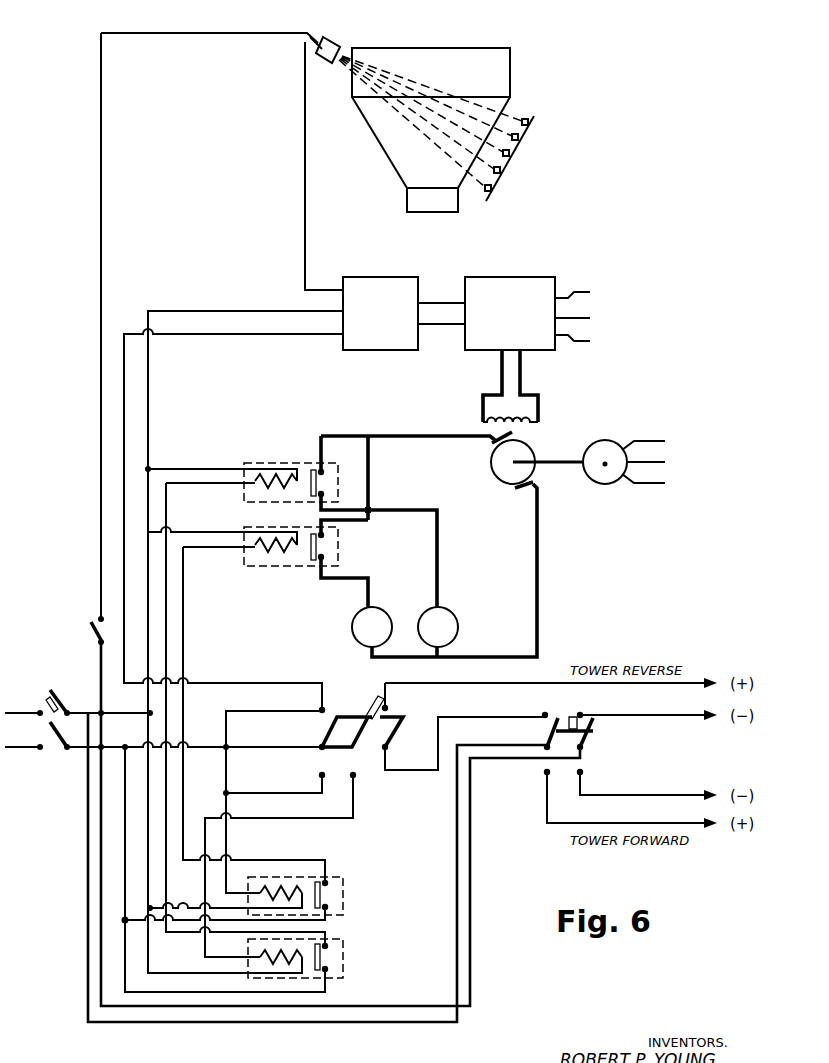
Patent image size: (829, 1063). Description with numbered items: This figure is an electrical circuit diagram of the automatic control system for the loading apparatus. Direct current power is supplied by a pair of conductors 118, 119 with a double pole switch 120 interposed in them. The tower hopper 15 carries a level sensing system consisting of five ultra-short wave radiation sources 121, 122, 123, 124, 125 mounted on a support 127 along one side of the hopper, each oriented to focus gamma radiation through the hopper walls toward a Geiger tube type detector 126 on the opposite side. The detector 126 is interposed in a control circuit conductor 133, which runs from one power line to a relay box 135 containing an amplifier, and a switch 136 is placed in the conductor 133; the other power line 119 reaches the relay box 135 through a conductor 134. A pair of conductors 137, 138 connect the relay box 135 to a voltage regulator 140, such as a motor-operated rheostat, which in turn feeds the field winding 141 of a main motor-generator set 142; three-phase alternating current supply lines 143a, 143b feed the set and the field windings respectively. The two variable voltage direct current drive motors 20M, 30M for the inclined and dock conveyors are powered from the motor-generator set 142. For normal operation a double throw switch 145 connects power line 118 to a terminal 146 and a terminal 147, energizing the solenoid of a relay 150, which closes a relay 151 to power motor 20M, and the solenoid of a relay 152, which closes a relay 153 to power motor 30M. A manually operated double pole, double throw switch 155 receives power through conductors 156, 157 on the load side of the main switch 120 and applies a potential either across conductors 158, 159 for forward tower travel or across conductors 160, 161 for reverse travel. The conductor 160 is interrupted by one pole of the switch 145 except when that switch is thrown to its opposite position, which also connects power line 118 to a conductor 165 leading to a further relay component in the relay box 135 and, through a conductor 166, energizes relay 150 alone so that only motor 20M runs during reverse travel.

The tower hopper 15 is at (510, 80).
The conductor 118 is at (8, 762).
The conductor 119 is at (6, 712).
The double pole switch 120 is at (57, 752).
The ultra-short wave radiation source 121 is at (492, 187).
The ultra-short wave radiation source 122 is at (501, 169).
The ultra-short wave radiation source 123 is at (510, 152).
The ultra-short wave radiation source 124 is at (519, 136).
The ultra-short wave radiation source 125 is at (529, 121).
The detector 126 is at (333, 36).
The support 127 is at (487, 200).
The control circuit conductor 133 is at (305, 172).
The conductor 134 is at (186, 311).
The relay box 135 is at (405, 277).
The switch 136 is at (91, 634).
The conductor 137 is at (428, 306).
The conductor 138 is at (450, 327).
The voltage regulator 140 is at (510, 277).
The field winding 141 is at (540, 420).
The main motor-generator set 142 is at (568, 470).
The three-phase alternating current supply line 143a is at (665, 441).
The three-phase alternating current supply line 143b is at (590, 293).
The double throw switch 145 is at (372, 703).
The terminal 146 is at (320, 775).
The terminal 147 is at (356, 777).
The relay 150 is at (345, 893).
The relay 151 is at (270, 567).
The relay 152 is at (345, 958).
The relay 153 is at (284, 462).
The double pole, double throw switch 155 is at (602, 730).
The conductor 156 is at (458, 1006).
The conductor 157 is at (385, 1022).
The conductor 158 is at (607, 801).
The conductor 159 is at (612, 795).
The conductor 160 is at (490, 715).
The conductor 161 is at (616, 715).
The conductor 165 is at (210, 338).
The conductor 166 is at (245, 711).
The drive motor 20M is at (353, 628).
The drive motor 30M is at (418, 622).